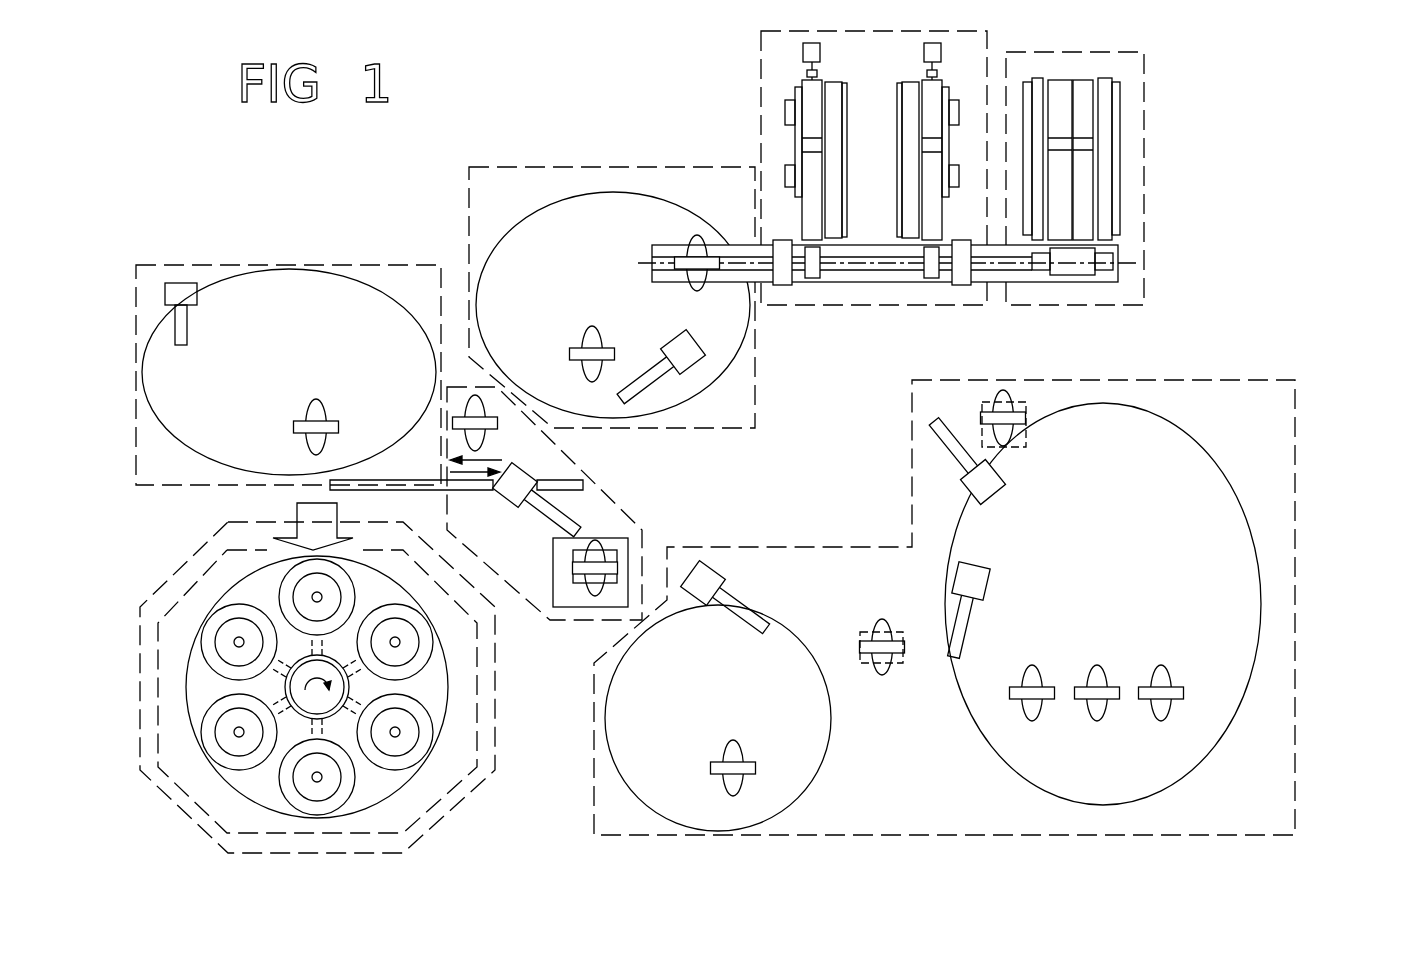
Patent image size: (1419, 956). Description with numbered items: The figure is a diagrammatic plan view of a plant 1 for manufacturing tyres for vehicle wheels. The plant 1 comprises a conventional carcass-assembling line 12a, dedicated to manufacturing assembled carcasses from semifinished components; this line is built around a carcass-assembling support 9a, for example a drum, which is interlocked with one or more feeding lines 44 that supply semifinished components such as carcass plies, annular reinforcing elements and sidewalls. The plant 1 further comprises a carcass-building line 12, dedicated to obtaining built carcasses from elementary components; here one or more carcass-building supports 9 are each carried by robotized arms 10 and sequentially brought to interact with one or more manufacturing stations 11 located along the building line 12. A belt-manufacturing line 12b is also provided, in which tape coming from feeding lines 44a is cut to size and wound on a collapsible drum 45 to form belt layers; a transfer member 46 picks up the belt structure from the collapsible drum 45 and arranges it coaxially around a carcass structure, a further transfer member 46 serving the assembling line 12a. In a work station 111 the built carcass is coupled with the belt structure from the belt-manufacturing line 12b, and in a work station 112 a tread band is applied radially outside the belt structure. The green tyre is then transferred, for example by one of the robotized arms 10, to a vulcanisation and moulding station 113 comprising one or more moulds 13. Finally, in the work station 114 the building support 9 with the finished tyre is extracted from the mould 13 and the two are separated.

The plant 1 is at (1293, 170).
The carcass-building support 9 is at (318, 395).
The carcass-assembling support 9a is at (1077, 268).
The robotized arm 10 is at (187, 332).
The manufacturing station 11 is at (1245, 502).
The carcass-building line 12 is at (1243, 357).
The carcass-assembling line 12a is at (1148, 95).
The belt-manufacturing line 12b is at (761, 88).
The mould 13 is at (305, 593).
The feeding line 44 is at (1110, 130).
The feeding line 44a is at (835, 125).
The collapsible drum 45 is at (815, 290).
The transfer member 46 is at (785, 295).
The work station 111 is at (523, 167).
The work station 112 is at (182, 265).
The vulcanisation and moulding station 113 is at (457, 812).
The work station 114 is at (643, 530).